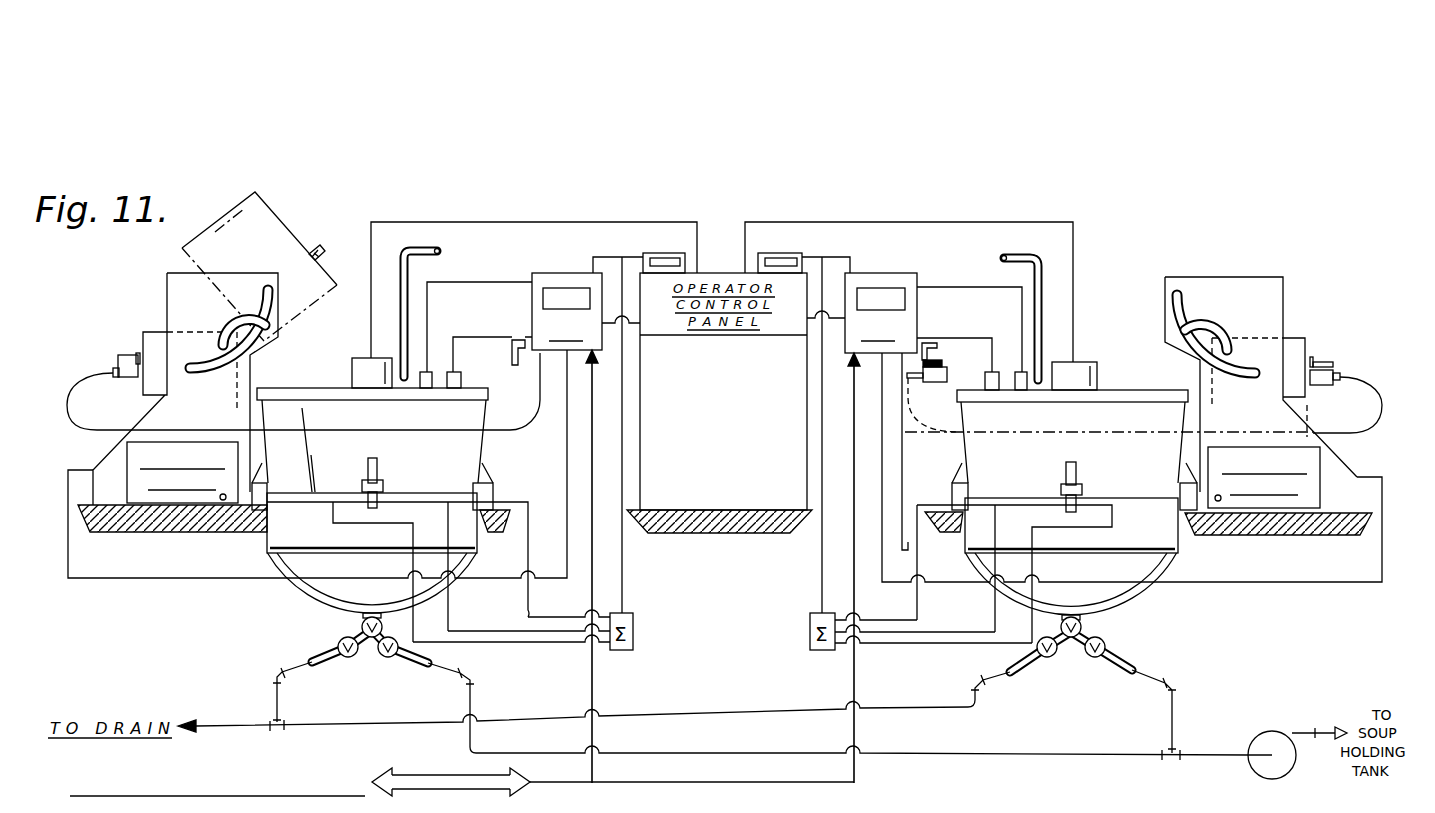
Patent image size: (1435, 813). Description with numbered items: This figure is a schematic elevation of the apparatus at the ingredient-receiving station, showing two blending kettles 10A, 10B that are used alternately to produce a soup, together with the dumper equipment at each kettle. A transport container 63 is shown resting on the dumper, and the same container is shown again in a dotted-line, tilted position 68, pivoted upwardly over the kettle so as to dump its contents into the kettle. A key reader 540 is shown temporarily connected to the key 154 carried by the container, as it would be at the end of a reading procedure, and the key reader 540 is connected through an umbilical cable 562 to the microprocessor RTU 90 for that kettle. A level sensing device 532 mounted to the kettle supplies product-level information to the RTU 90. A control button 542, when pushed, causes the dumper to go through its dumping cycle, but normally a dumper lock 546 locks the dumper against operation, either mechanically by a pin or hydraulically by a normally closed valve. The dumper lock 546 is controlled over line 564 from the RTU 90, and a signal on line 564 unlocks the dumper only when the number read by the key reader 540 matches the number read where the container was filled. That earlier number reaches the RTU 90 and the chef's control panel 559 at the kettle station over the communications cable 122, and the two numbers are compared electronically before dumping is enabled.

The blending kettle 10A is at (447, 468).
The blending kettle 10B is at (1145, 468).
The container 63 is at (153, 332).
The dumper plate in tilted position 68 is at (283, 224).
The microprocessor RTU 90 is at (548, 252).
The communications cable 122 is at (675, 783).
The key 154 is at (342, 240).
The level sensing device 532 is at (355, 368).
The key reader 540 is at (113, 365).
The control button 542 is at (213, 506).
The dumper lock 546 is at (127, 446).
The chef's control panel 559 is at (427, 212).
The umbilical cable 562 is at (200, 428).
The line 564 is at (152, 578).